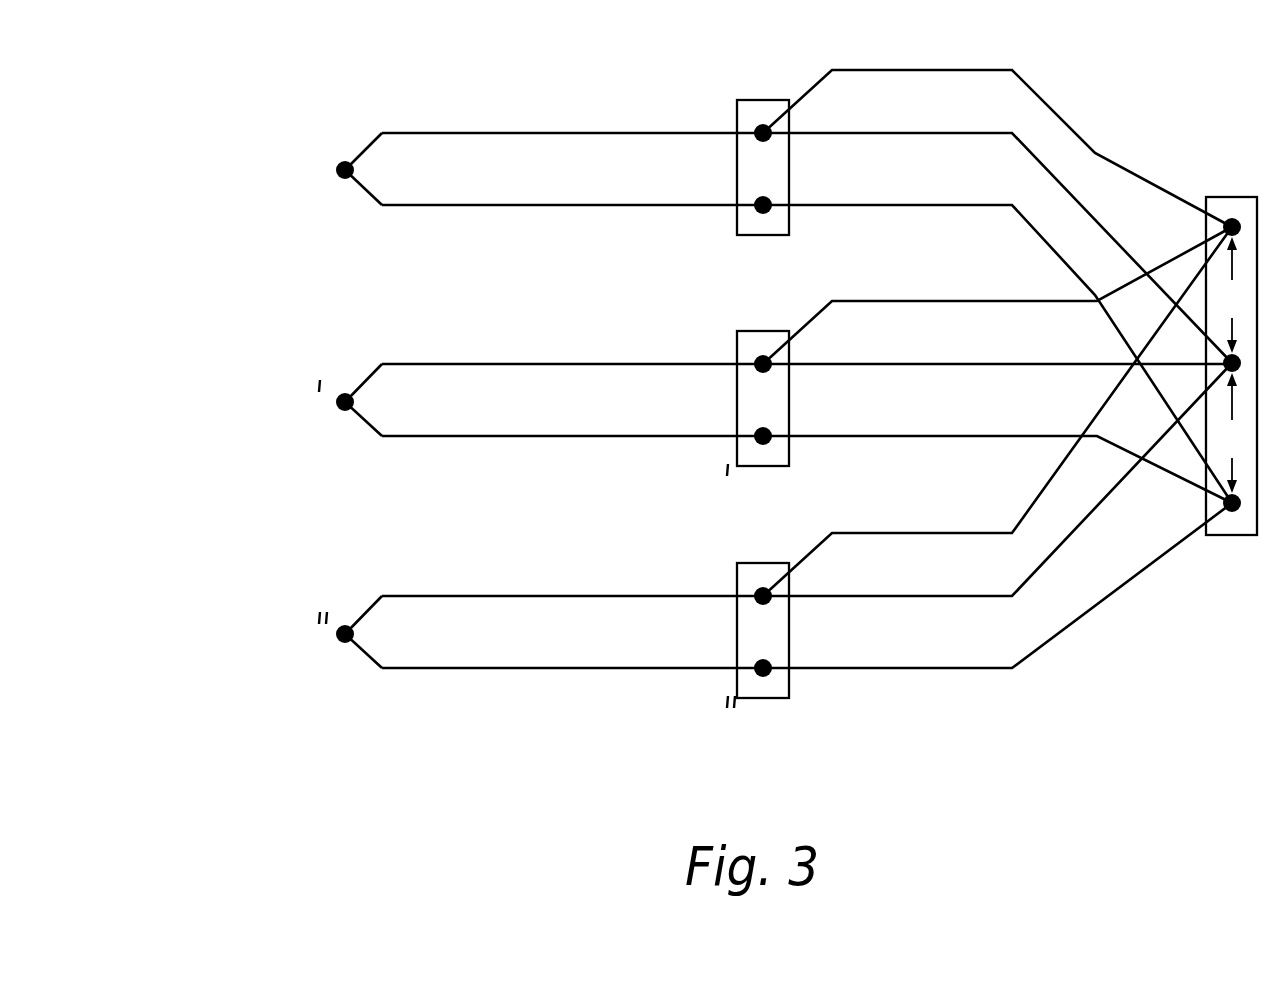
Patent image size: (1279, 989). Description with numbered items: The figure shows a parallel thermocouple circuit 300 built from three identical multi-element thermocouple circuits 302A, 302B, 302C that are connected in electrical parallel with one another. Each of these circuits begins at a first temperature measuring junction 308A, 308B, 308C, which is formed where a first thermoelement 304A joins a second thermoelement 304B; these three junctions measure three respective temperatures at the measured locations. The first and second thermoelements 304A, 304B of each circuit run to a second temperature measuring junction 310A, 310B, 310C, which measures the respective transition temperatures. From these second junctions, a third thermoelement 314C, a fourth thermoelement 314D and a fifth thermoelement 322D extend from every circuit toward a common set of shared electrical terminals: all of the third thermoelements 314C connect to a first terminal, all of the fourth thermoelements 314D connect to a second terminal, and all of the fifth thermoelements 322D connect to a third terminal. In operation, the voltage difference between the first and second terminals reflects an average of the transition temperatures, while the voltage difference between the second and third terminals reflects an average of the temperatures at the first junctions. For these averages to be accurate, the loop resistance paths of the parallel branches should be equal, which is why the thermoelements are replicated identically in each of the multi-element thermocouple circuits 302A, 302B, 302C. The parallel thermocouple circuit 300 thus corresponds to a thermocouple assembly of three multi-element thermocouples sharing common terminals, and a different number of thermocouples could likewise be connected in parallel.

The parallel thermocouple circuit 300 is at (150, 56).
The multi-element thermocouple circuit 302A is at (631, 110).
The multi-element thermocouple circuit 302B is at (631, 330).
The multi-element thermocouple circuit 302C is at (631, 556).
The first thermoelement 304A is at (572, 341).
The second thermoelement 304B is at (572, 414).
The first temperature measuring junction 308A is at (345, 161).
The first temperature measuring junction 308B is at (345, 393).
The first temperature measuring junction 308C is at (345, 625).
The second temperature measuring junction 310A is at (765, 123).
The second temperature measuring junction 310B is at (765, 354).
The second temperature measuring junction 310C is at (765, 586).
The third thermoelement 314C is at (997, 310).
The fourth thermoelement 314D is at (997, 344).
The fifth thermoelement 322D is at (997, 414).